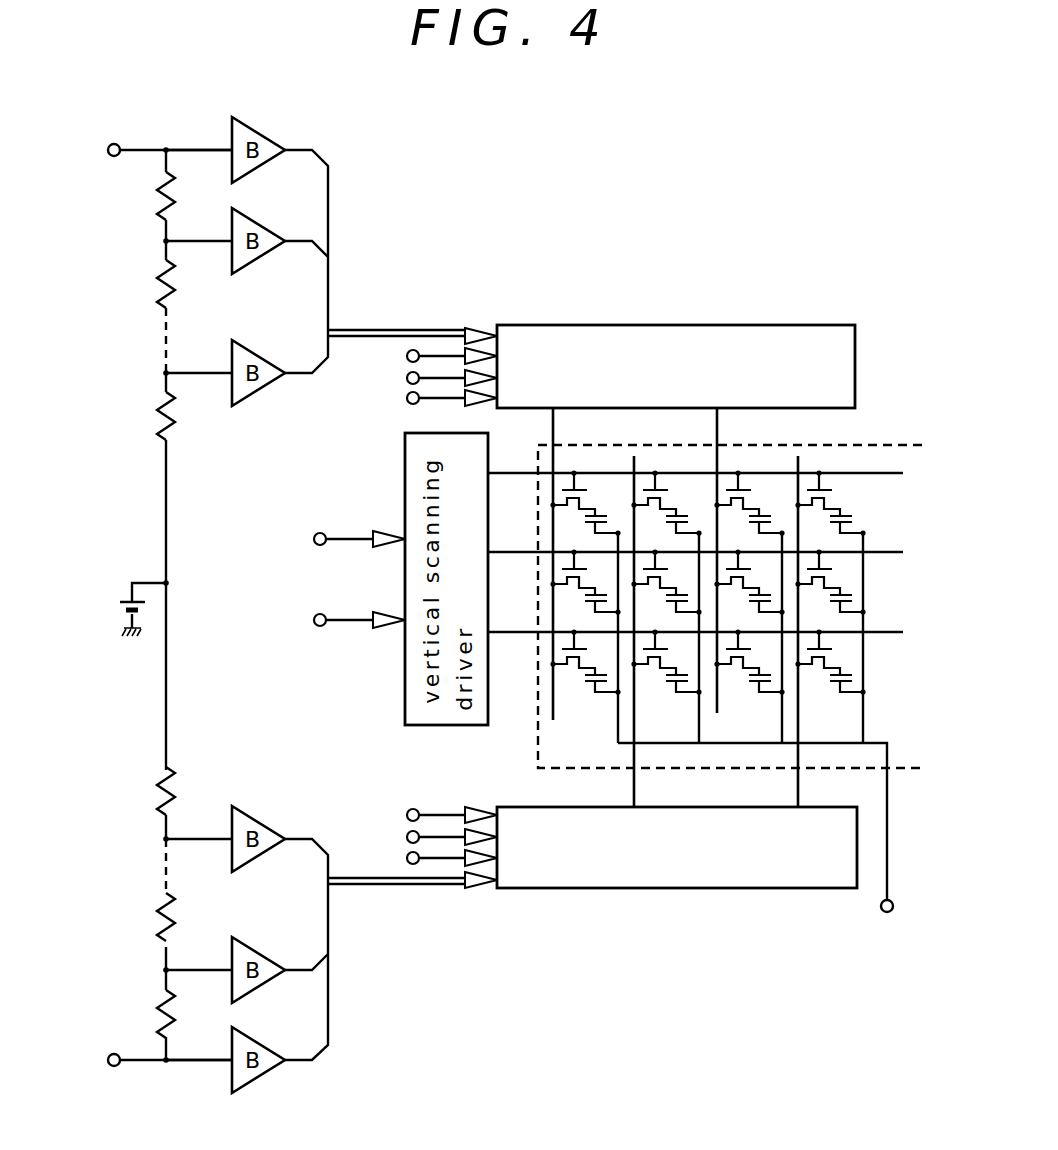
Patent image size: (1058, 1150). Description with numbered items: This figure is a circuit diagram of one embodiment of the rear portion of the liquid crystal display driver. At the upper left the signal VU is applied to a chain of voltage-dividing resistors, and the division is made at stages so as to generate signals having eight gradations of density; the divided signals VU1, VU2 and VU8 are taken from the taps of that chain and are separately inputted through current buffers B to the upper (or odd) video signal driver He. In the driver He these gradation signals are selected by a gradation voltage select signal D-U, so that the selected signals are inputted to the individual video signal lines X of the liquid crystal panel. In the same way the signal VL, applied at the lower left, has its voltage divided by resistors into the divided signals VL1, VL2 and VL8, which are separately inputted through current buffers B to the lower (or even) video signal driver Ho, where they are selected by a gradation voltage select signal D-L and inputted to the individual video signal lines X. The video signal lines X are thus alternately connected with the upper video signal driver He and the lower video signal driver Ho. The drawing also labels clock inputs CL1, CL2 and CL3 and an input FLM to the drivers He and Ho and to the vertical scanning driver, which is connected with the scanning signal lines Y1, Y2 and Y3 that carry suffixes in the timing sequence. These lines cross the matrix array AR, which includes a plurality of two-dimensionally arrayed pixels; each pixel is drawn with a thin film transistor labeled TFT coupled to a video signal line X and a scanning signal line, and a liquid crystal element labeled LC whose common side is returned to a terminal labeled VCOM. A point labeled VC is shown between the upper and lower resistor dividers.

The signal VU is at (142, 151).
The upper gray scale voltage 1 VU1 is at (199, 136).
The upper gray scale voltage 2 VU2 is at (199, 228).
The upper gray scale voltage 8 VU8 is at (199, 360).
The current buffer B is at (258, 605).
The upper video signal driver He is at (757, 325).
The lower video signal driver Ho is at (720, 888).
The clock signal CL1 is at (401, 816).
The clock signal CL2 is at (401, 597).
The clock signal CL3 is at (326, 623).
The frame start signal FLM is at (356, 460).
The gradation voltage select signal D-U is at (401, 398).
The gradation voltage select signal D-L is at (401, 859).
The video signal line X is at (687, 607).
The scanning signal line Y1 is at (695, 460).
The scanning signal line Y2 is at (695, 539).
The scanning signal line Y3 is at (695, 619).
The matrix array AR is at (538, 754).
The thin film transistor TFT is at (731, 582).
The liquid crystal pixel capacitance LC is at (768, 626).
The common electrode voltage terminal VCOM is at (771, 844).
The center reference voltage VC is at (116, 608).
The signal VL is at (142, 1061).
The lower gray scale voltage 1 VL1 is at (199, 1047).
The lower gray scale voltage 2 VL2 is at (199, 957).
The lower gray scale voltage 8 VL8 is at (199, 826).